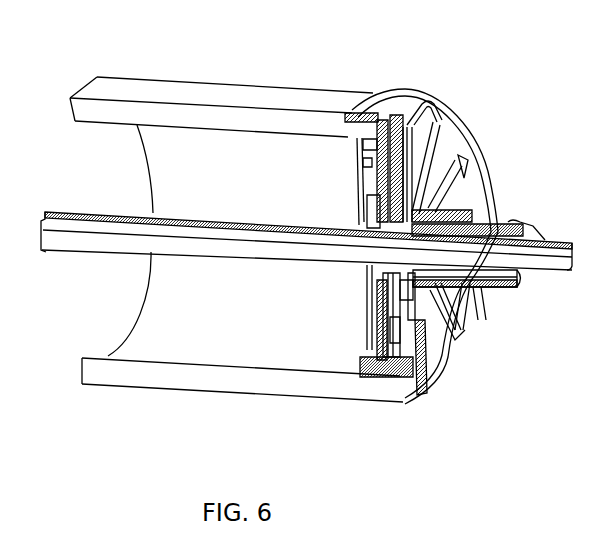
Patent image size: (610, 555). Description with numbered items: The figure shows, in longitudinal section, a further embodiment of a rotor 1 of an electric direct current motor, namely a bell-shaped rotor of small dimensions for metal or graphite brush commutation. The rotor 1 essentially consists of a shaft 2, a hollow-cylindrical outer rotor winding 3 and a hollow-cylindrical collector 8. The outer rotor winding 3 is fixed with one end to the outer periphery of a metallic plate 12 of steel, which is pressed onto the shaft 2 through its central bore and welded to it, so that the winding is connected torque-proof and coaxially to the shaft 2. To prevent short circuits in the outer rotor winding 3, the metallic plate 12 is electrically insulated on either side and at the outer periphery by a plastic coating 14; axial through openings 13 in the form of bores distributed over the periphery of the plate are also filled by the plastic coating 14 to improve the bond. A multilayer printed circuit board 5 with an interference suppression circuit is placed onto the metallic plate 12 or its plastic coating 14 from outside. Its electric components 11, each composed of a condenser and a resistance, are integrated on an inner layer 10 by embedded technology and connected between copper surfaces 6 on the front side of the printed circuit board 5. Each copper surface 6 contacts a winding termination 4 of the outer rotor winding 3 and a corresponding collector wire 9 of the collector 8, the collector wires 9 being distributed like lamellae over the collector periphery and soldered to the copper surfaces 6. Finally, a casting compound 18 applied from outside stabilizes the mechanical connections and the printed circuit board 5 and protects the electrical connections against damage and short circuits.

The rotor 1 is at (547, 63).
The shaft 2 is at (62, 212).
The outer rotor winding 3 is at (98, 104).
The winding termination 4 is at (423, 92).
The printed circuit board 5 is at (373, 137).
The copper surfaces 6 is at (473, 131).
The collector 8 is at (522, 279).
The collector wire 9 is at (502, 217).
The inner layer 10 is at (377, 130).
The electric components 11 is at (407, 400).
The metallic plate 12 is at (370, 277).
The axial through openings 13 is at (350, 178).
The plastic coating 14 is at (363, 388).
The casting compound 18 is at (460, 117).